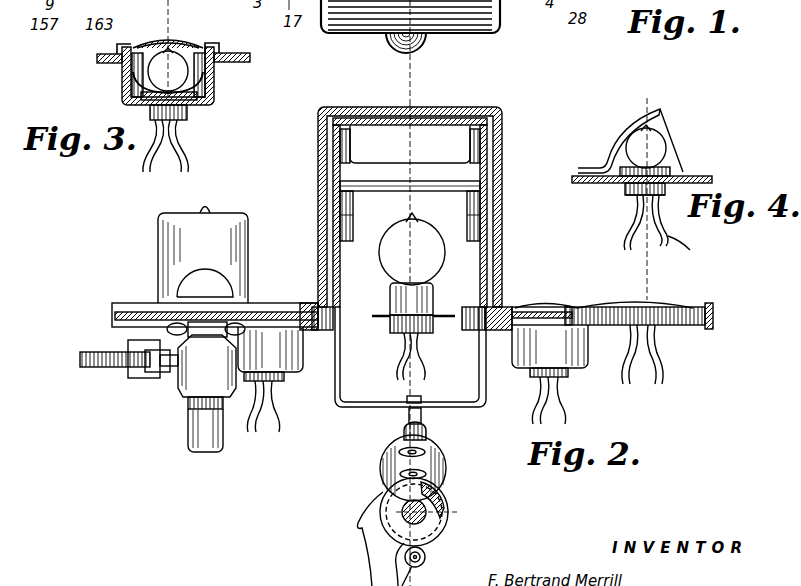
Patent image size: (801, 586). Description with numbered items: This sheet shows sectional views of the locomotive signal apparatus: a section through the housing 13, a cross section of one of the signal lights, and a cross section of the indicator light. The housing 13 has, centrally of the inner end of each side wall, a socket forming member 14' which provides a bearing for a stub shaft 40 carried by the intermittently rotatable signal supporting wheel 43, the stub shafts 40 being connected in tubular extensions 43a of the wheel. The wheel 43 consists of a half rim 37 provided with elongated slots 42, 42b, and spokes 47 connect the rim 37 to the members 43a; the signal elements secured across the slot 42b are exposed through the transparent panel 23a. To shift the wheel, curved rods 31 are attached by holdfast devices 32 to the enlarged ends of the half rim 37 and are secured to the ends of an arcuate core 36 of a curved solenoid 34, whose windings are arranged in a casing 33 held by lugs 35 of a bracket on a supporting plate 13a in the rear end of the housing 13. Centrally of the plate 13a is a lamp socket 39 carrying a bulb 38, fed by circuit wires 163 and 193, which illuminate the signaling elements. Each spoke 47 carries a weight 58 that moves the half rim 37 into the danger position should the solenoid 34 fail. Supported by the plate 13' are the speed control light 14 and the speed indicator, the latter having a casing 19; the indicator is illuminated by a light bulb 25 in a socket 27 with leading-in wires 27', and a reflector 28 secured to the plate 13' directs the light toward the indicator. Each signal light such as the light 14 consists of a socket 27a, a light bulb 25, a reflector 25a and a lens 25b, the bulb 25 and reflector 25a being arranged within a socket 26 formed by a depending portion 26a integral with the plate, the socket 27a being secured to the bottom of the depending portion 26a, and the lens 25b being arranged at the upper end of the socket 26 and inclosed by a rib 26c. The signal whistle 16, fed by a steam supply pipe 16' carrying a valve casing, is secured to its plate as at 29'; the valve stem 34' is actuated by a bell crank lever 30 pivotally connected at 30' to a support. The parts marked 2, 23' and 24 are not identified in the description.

In FIG. 2, the dial 2 is at (412, 68).
In FIG. 2, the housing 13 is at (430, 207).
In FIG. 2, the plate 13' is at (514, 303).
In FIG. 2, the supporting plate 13a is at (447, 323).
In FIG. 2, the speed control signal light 14 is at (571, 299).
In FIG. 2, the socket forming member 14' is at (304, 299).
In FIG. 2, the signal whistle 16 is at (224, 255).
In FIG. 2, the steam supply pipe 16' is at (186, 425).
In FIG. 2, the casing 19 is at (672, 328).
In FIG. 2, the transparent panel 23a is at (432, 107).
In FIG. 2, the liner 23' is at (427, 247).
In FIG. 3, the lamp socket 24 is at (214, 85).
In FIG. 2, the lamp socket 24 is at (596, 402).
In FIG. 3, the light bulb 25 is at (176, 66).
In FIG. 4, the light bulb 25 is at (656, 148).
In FIG. 3, the reflector 25a is at (205, 75).
In FIG. 3, the lens 25b is at (167, 50).
In FIG. 3, the socket 26 is at (126, 96).
In FIG. 3, the depending portion 26a is at (134, 70).
In FIG. 3, the rib 26c is at (216, 47).
In FIG. 4, the socket 27 is at (625, 201).
In FIG. 4, the leading-in wires 27' is at (653, 230).
In FIG. 3, the socket 27a is at (188, 113).
In FIG. 4, the reflector 28 is at (632, 118).
In FIG. 2, the securing means 29' is at (215, 302).
In FIG. 2, the bell crank lever 30 is at (115, 381).
In FIG. 2, the pivotal connection 30' is at (130, 387).
In FIG. 2, the curved rods 31 is at (422, 412).
In FIG. 2, the holdfast devices 32 is at (420, 399).
In FIG. 2, the casing 33 is at (447, 458).
In FIG. 2, the curved solenoid 34 is at (442, 512).
In FIG. 2, the valve stem 34' is at (157, 382).
In FIG. 2, the lugs 35 is at (382, 473).
In FIG. 2, the arcuate core 36 is at (404, 425).
In FIG. 2, the half rim 37 is at (485, 402).
In FIG. 2, the bulb 38 is at (395, 254).
In FIG. 2, the lamp socket 39 is at (395, 330).
In FIG. 2, the stub shafts 40 is at (316, 390).
In FIG. 2, the elongated slot 42 is at (446, 187).
In FIG. 2, the elongated slot 42b is at (481, 238).
In FIG. 2, the signal supporting wheel 43 is at (356, 150).
In FIG. 2, the tubular extensions 43a is at (440, 315).
In FIG. 2, the spokes 47 is at (500, 205).
In FIG. 2, the weight 58 is at (354, 225).
In FIG. 2, the circuit wire 163 is at (420, 352).
In FIG. 2, the circuit wire 193 is at (405, 366).